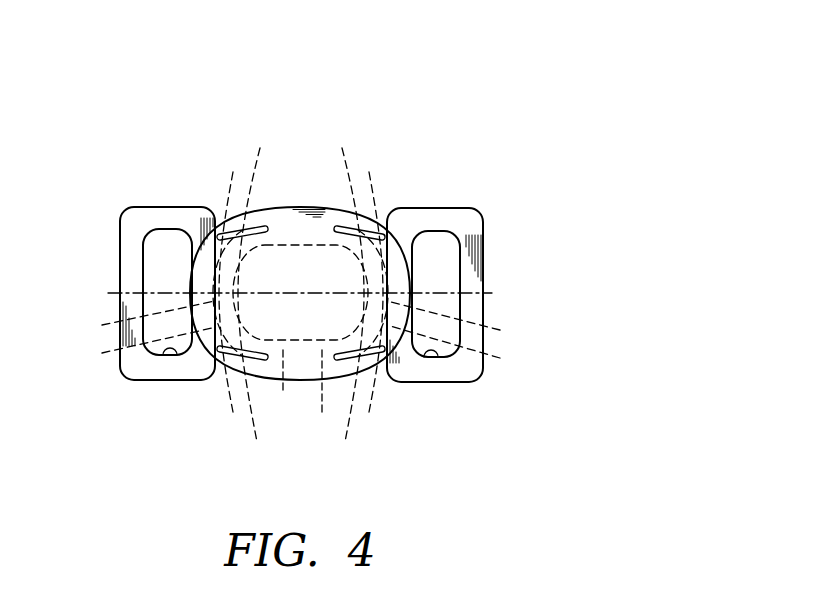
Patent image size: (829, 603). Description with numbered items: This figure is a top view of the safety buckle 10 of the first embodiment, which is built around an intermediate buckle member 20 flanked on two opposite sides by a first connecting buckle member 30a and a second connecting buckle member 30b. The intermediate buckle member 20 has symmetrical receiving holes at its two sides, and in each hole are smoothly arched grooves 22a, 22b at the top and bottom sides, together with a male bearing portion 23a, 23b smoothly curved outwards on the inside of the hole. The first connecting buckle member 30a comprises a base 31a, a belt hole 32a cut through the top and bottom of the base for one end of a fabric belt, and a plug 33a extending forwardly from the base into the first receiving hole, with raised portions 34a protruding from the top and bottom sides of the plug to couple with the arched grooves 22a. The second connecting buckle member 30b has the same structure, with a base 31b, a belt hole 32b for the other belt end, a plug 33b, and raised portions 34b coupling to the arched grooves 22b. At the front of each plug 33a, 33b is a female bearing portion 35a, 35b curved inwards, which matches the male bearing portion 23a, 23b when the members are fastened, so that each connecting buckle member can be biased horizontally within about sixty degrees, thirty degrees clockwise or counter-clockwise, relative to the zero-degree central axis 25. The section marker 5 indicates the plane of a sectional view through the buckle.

The section line 5- 5 is at (70, 249).
The safety buckle 10 is at (321, 90).
The intermediate buckle member 20 is at (292, 196).
The smoothly arched grooves 22a is at (253, 296).
The smoothly arched grooves 22b is at (351, 296).
The male bearing portion 23a is at (132, 348).
The male bearing portion 23b is at (469, 349).
The zero-degree central axis 25 is at (441, 290).
The first connecting buckle member 30a is at (172, 196).
The second connecting buckle member 30b is at (442, 196).
The base 31a is at (128, 231).
The base 31b is at (478, 233).
The belt hole 32a is at (177, 358).
The belt hole 32b is at (431, 359).
The plug 33a is at (282, 385).
The plug 33b is at (320, 397).
The raised portions 34a is at (238, 296).
The raised portions 34b is at (365, 296).
The female bearing portion 35a is at (133, 320).
The female bearing portion 35b is at (468, 322).